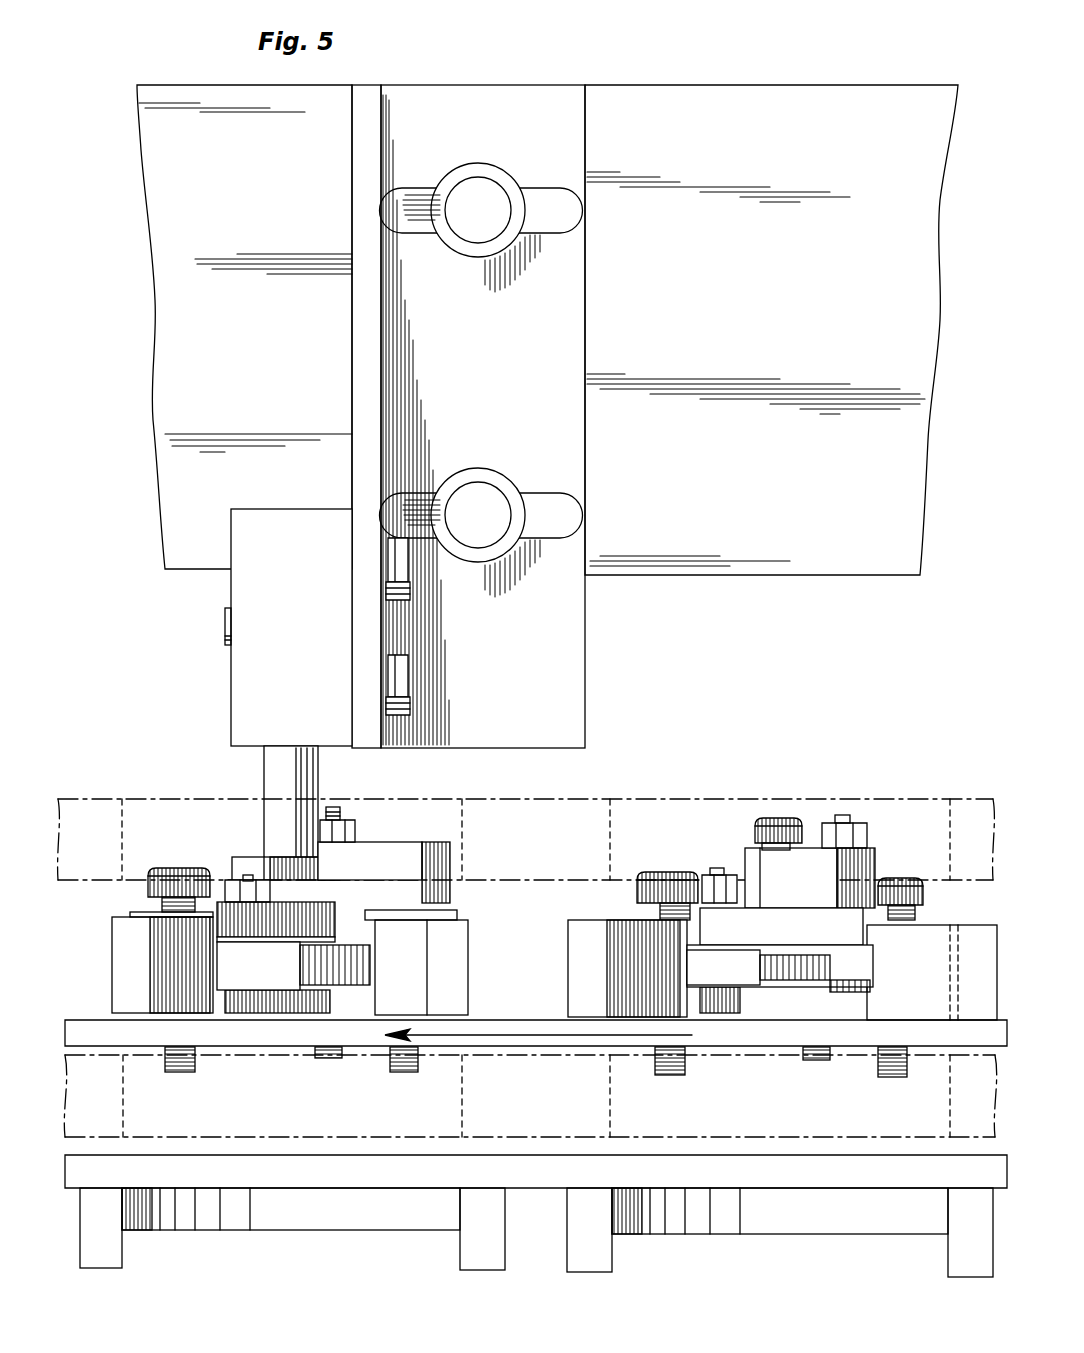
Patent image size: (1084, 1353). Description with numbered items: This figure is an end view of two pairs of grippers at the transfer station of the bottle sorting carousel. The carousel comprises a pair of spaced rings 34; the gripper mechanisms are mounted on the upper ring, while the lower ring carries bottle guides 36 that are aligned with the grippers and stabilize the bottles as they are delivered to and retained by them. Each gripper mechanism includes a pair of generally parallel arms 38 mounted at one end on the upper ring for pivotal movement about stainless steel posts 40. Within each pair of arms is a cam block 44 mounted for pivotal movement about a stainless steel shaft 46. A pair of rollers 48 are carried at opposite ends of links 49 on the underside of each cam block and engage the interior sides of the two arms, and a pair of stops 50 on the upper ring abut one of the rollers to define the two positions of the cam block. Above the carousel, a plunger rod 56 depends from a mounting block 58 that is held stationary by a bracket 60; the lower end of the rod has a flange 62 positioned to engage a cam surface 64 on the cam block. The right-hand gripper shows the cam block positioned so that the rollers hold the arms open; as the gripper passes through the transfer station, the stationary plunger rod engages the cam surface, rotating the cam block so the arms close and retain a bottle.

The bracket 60 is at (568, 95).
The mounting block 58 is at (240, 650).
The plunger rod 56 is at (310, 775).
The flange 62 is at (240, 848).
The cam block 44 is at (372, 845).
The cam surface 64 is at (400, 862).
The stainless steel post 40 is at (165, 870).
The stainless steel shaft 46 is at (770, 818).
The arm 38 is at (577, 947).
The link 49 is at (243, 940).
The roller 48 is at (365, 960).
The stop 50 is at (360, 985).
The ring 34 is at (490, 1025).
The bottle guide 36 is at (313, 1215).